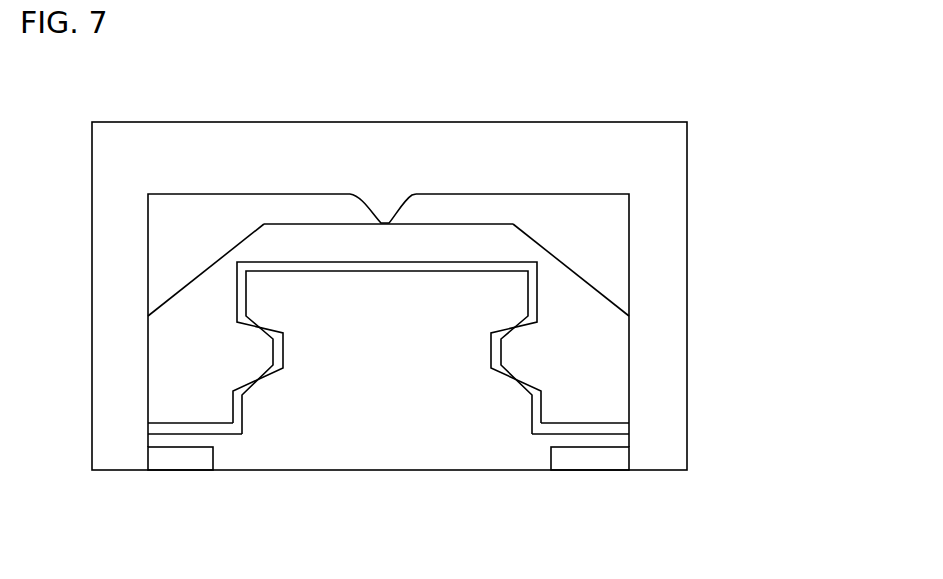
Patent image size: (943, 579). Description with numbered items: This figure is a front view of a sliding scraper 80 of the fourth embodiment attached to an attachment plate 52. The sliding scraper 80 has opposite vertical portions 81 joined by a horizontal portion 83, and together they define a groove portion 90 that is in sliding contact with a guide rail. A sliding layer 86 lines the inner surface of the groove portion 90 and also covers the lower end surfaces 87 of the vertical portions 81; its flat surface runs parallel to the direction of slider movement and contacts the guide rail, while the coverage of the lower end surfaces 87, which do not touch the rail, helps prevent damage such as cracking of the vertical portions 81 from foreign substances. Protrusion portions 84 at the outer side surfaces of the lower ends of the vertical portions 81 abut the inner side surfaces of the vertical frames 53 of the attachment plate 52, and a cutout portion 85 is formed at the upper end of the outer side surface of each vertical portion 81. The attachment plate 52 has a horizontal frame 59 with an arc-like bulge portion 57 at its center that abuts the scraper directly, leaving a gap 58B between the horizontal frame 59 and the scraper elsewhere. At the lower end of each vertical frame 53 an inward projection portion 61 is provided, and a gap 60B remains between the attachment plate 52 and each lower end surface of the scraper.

The attachment plate 52 is at (595, 121).
The vertical frame 53 is at (118, 290).
The bulge portion 57 is at (385, 206).
The gap 58B is at (291, 213).
The horizontal frame 59 is at (187, 137).
The gap 60B is at (197, 437).
The projection portion 61 is at (185, 460).
The sliding scraper 80 is at (566, 232).
The vertical portion 81 is at (170, 365).
The horizontal portion 83 is at (476, 242).
The protrusion portion 84 is at (148, 340).
The cutout portion 85 is at (212, 265).
The sliding layer 86 is at (283, 353).
The lower end surface 87 is at (178, 427).
The groove portion 90 is at (485, 379).